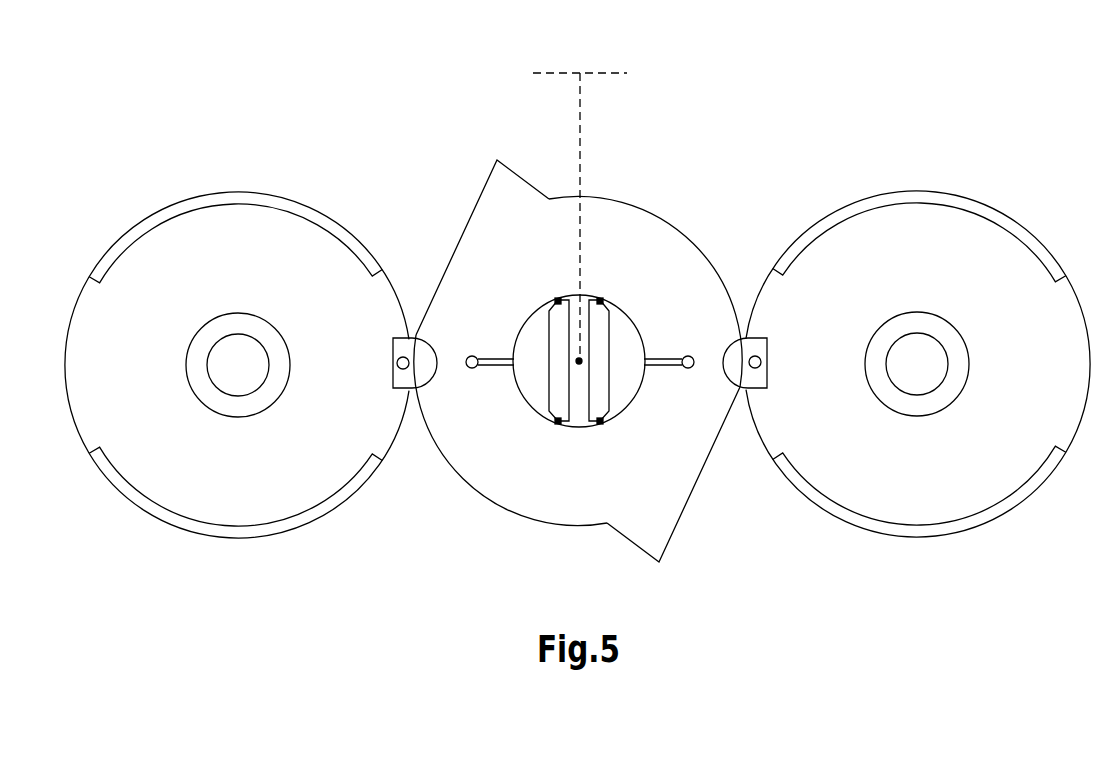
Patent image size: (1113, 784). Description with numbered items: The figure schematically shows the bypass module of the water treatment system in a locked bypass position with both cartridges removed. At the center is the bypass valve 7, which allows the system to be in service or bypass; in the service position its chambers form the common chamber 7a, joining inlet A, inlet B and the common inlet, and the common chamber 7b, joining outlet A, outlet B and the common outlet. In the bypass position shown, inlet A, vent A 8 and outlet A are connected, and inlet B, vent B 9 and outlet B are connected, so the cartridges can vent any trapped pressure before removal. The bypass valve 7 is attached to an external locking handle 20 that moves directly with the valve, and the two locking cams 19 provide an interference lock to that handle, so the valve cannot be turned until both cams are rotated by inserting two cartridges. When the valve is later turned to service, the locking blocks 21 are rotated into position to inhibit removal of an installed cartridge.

The bypass valve 7 is at (622, 292).
The common chamber 7a is at (537, 342).
The common chamber 7b is at (628, 372).
The vent A 8 is at (468, 368).
The vent B 9 is at (688, 355).
The locking cam 19 is at (403, 383).
The locking handle 20 is at (585, 68).
The locking block 21 is at (505, 187).